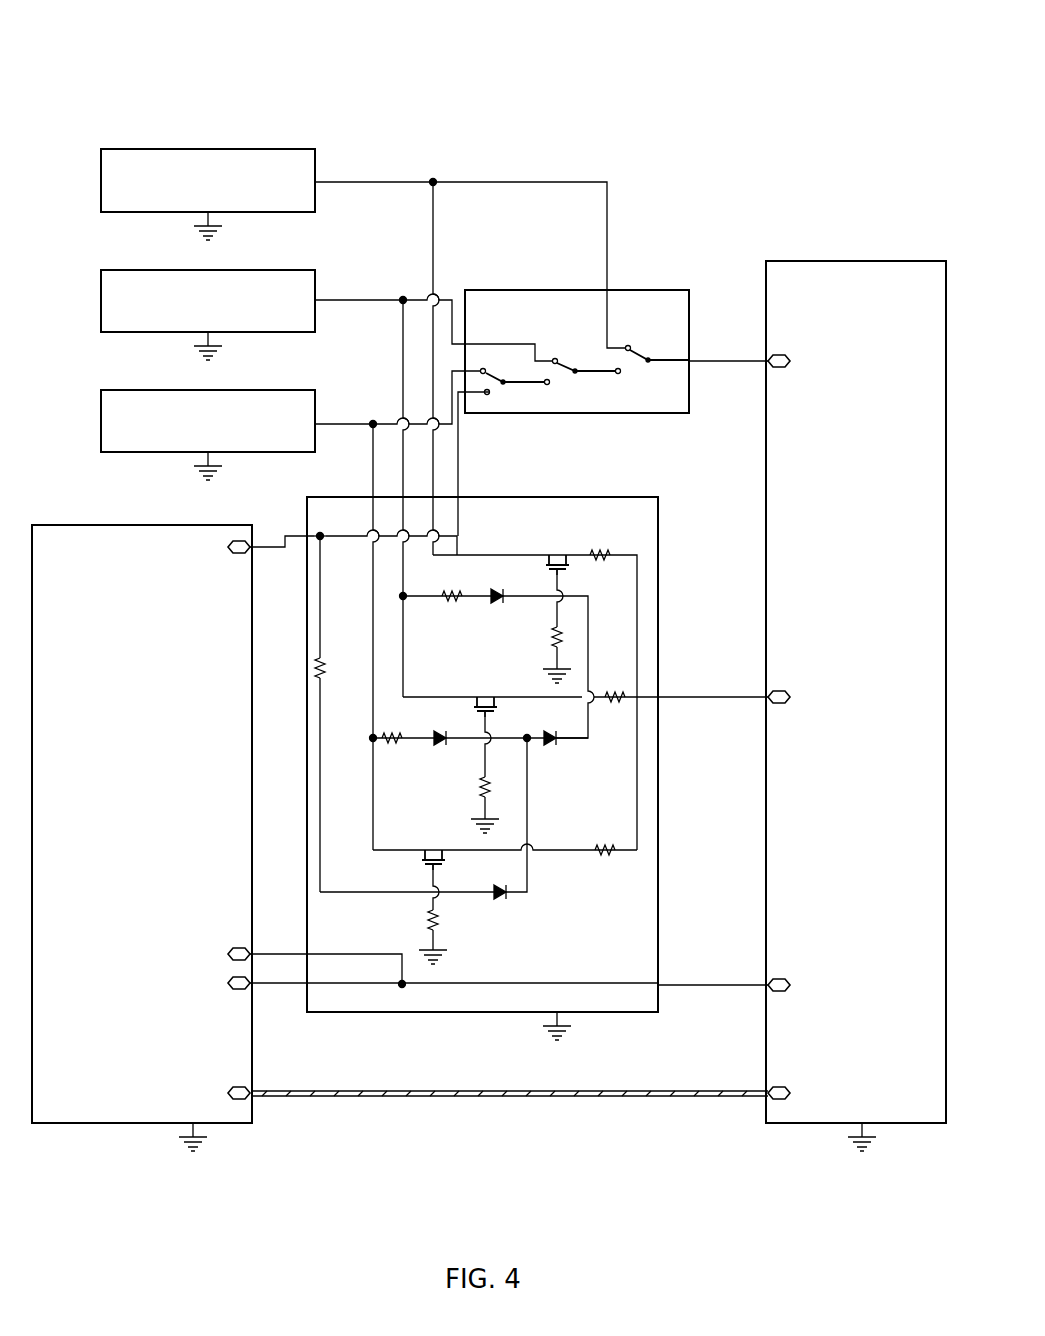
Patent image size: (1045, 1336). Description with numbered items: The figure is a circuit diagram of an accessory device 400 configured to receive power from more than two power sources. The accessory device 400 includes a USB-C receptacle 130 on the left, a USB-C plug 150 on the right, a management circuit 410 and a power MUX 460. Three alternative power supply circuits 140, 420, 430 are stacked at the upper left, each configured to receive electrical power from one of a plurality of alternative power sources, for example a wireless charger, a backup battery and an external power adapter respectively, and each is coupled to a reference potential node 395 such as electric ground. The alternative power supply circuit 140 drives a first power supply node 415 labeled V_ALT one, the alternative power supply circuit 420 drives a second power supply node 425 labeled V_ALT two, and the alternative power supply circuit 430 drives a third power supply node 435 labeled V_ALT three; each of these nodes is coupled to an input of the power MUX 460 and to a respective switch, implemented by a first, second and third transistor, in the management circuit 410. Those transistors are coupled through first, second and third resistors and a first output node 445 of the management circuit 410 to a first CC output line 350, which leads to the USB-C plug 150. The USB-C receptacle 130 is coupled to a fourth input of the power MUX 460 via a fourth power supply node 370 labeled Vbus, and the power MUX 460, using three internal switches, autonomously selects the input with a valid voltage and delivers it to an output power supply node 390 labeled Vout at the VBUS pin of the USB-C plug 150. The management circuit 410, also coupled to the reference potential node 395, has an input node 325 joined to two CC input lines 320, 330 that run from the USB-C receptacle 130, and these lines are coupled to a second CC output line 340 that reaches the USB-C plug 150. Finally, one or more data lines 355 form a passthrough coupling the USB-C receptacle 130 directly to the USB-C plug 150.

The accessory device 400 is at (116, 68).
The alternative power supply circuit 430 is at (105, 213).
The alternative power supply circuit 420 is at (105, 333).
The alternative power supply circuit 140 is at (105, 453).
The reference potential node 395 is at (196, 226).
The third power supply node 435 is at (431, 184).
The second power supply node 425 is at (401, 302).
The first power supply node 415 is at (371, 426).
The fourth power supply node 370 is at (320, 532).
The power MUX 460 is at (573, 414).
The output power supply node 390 is at (757, 365).
The USB-C plug 150 is at (912, 1124).
The USB-C receptacle 130 is at (82, 1124).
The management circuit 410 is at (658, 1014).
The first CC output line 350 is at (752, 700).
The first output node 445 is at (661, 700).
The second CC output line 340 is at (757, 990).
The CC input line 320 is at (287, 950).
The CC input line 330 is at (286, 991).
The input node 325 is at (403, 989).
The data lines 355 is at (440, 1098).